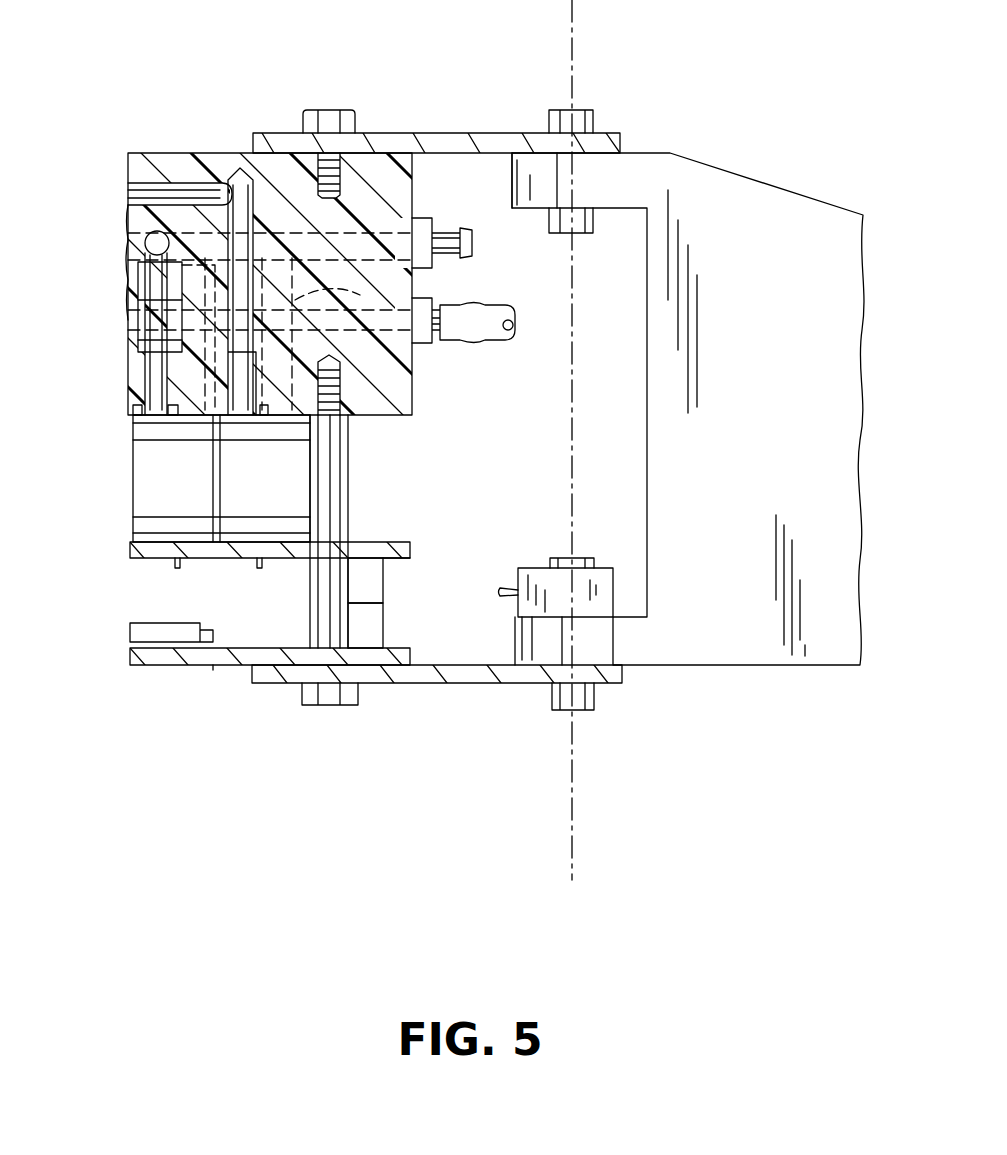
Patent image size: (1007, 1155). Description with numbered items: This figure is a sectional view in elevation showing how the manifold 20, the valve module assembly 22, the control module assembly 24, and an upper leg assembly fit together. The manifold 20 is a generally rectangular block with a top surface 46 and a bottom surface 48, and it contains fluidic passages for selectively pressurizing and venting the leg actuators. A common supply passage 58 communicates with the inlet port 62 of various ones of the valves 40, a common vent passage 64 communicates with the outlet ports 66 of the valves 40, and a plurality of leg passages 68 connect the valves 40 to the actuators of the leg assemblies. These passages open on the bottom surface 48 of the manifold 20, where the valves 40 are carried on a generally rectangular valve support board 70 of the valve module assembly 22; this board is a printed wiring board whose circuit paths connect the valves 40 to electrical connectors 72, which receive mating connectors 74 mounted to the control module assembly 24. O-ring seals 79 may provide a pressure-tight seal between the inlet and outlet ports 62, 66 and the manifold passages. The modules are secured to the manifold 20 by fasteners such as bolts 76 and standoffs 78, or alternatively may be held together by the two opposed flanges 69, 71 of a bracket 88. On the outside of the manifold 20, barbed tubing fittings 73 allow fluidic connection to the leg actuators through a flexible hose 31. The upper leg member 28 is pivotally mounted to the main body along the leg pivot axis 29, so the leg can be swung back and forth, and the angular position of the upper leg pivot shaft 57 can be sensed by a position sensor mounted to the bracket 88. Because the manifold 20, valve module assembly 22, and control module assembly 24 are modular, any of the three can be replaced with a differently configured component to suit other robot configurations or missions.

The manifold 20 is at (128, 233).
The valve module assembly 22 is at (153, 560).
The control module assembly 24 is at (165, 663).
The upper leg member 28 is at (740, 175).
The leg pivot axis 29 is at (572, 48).
The flexible hose 31 is at (485, 338).
The valve 40 is at (210, 500).
The top surface 46 is at (185, 152).
The bottom surface 48 is at (385, 418).
The upper leg pivot shaft 57 is at (517, 533).
The common supply passage 58 is at (145, 202).
The inlet port 62 is at (245, 390).
The common vent passage 64 is at (130, 275).
The outlet port 66 is at (195, 400).
The leg passage 68 is at (390, 216).
The flange 69 is at (497, 133).
The valve support board 70 is at (420, 545).
The flange 71 is at (540, 685).
The electrical connector 72 is at (383, 590).
The barbed tubing fitting 73 is at (440, 296).
The mating connector 74 is at (383, 628).
The bolt 76 is at (345, 705).
The standoff 78 is at (350, 490).
The O-ring seal 79 is at (128, 412).
The bracket 88 is at (412, 133).